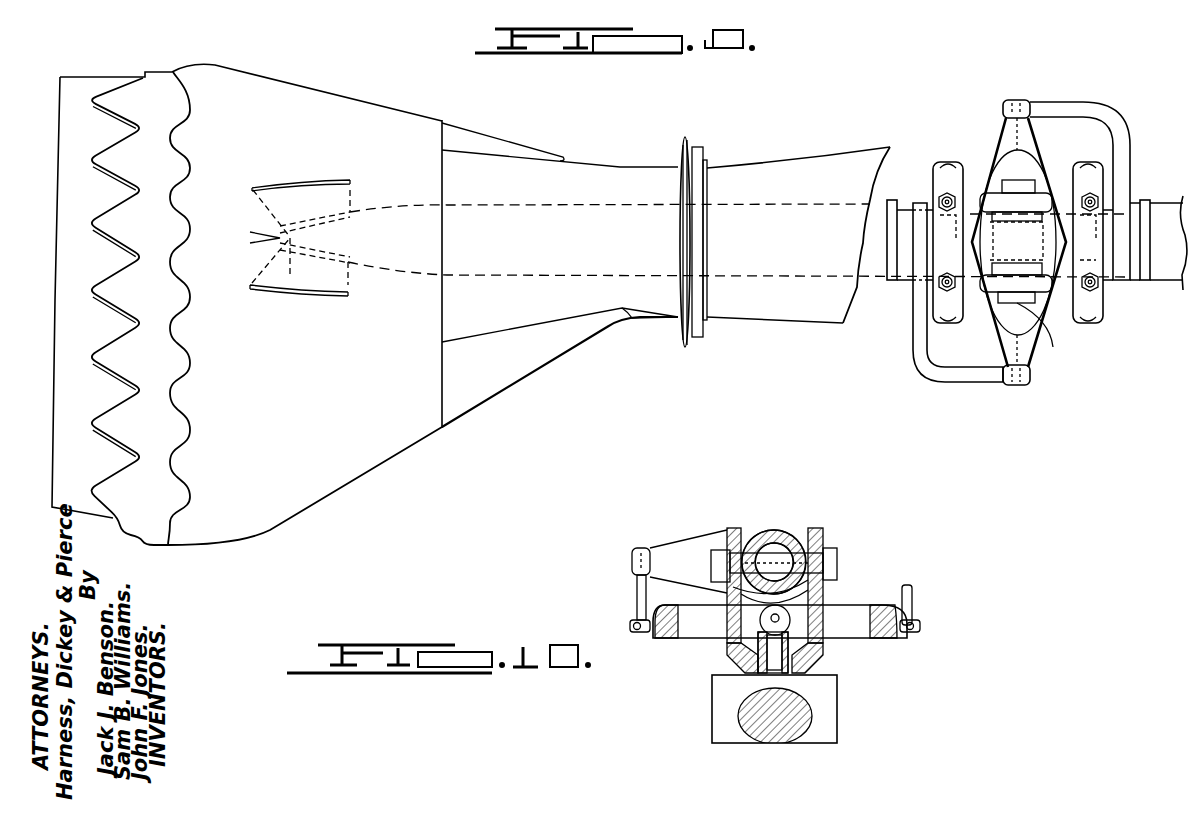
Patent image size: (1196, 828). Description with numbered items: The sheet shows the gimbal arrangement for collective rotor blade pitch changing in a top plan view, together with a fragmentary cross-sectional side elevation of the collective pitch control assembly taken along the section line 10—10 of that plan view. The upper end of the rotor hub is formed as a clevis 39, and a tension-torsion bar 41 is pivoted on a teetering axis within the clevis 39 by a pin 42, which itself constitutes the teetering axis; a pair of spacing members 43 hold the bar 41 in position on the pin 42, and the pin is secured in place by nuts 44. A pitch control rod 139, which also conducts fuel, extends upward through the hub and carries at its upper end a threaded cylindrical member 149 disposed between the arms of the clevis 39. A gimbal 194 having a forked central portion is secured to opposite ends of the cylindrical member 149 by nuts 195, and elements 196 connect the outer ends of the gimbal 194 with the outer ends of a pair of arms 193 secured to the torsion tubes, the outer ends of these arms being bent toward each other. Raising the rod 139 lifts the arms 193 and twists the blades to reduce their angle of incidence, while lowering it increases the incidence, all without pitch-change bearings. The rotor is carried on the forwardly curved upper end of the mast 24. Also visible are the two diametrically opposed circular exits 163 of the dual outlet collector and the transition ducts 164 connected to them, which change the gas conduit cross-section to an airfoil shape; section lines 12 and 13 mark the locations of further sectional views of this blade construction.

In FIG. 9, the section line 10— 10 is at (1050, 86).
In FIG. 9, the section line 12— 12 is at (250, 233).
In FIG. 9, the section line 13— 13 is at (75, 115).
In FIG. 10, the mast 24 is at (800, 717).
In FIG. 9, the clevis 39 is at (1003, 193).
In FIG. 10, the clevis 39 is at (827, 592).
In FIG. 9, the tension-torsion bar 41 is at (1015, 241).
In FIG. 10, the tension-torsion bar 41 is at (773, 540).
In FIG. 9, the pin 42 is at (1012, 310).
In FIG. 10, the pin 42 is at (817, 560).
In FIG. 9, the spacing members 43 is at (1000, 210).
In FIG. 10, the spacing members 43 is at (758, 532).
In FIG. 9, the nuts 44 is at (1030, 178).
In FIG. 10, the pitch control rod 139 is at (778, 651).
In FIG. 10, the cylindrical member 149 is at (770, 620).
In FIG. 9, the circular exits 163 is at (723, 168).
In FIG. 9, the transition ducts 164 is at (658, 307).
In FIG. 9, the arms 193 is at (1093, 107).
In FIG. 10, the arms 193 is at (680, 545).
In FIG. 9, the gimbal 194 is at (1043, 307).
In FIG. 10, the gimbal 194 is at (695, 625).
In FIG. 9, the nuts 195 is at (1090, 223).
In FIG. 10, the elements 196 is at (637, 592).